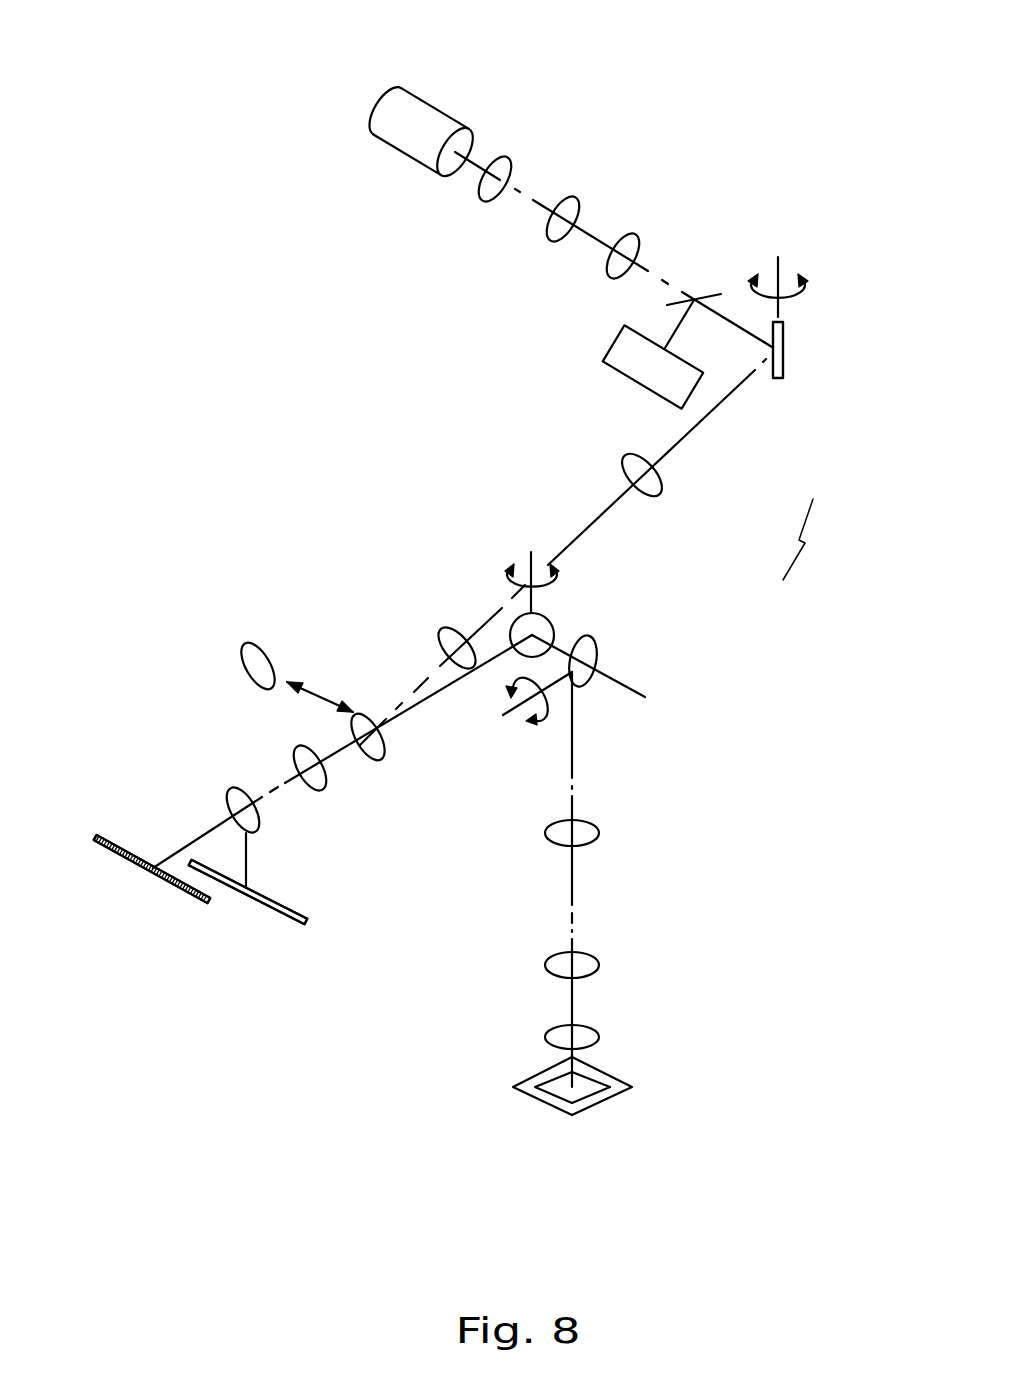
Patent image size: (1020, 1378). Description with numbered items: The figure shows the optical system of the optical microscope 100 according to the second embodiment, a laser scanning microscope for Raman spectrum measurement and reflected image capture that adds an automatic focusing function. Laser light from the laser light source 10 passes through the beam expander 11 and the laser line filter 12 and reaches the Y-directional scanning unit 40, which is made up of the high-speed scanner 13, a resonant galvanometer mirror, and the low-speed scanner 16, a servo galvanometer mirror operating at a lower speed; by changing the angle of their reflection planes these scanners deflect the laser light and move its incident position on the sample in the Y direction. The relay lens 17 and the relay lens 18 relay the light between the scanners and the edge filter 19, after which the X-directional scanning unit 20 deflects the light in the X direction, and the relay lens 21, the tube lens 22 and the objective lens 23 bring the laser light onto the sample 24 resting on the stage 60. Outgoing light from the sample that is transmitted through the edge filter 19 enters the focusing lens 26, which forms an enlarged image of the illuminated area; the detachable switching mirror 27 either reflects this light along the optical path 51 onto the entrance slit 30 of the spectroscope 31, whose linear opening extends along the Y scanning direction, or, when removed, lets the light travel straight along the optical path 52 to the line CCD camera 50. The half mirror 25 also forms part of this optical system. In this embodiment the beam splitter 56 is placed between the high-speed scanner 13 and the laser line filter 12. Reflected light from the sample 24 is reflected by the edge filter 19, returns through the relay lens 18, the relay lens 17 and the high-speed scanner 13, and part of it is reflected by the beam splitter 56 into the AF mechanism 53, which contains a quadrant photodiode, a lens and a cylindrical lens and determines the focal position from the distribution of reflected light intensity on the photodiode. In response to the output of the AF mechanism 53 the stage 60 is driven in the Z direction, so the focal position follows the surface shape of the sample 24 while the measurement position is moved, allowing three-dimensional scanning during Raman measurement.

The laser light source 10 is at (418, 110).
The beam expander 11 is at (532, 178).
The laser line filter 12 is at (625, 240).
The beam splitter 56 is at (713, 290).
The automatic focus (AF) mechanism 53 is at (613, 345).
The high-speed scanner 13 is at (778, 380).
The relay lens 17 is at (630, 467).
The low-speed scanner 16 is at (553, 630).
The Y-directional scanning unit 40 is at (811, 539).
The relay lens 18 is at (432, 641).
The X-directional scanning unit 20 is at (598, 661).
The half mirror 25 is at (253, 670).
The edge filter 19 is at (373, 760).
The focusing lens 26 is at (302, 757).
The switching mirror 27 is at (237, 813).
The optical path 52 is at (158, 863).
The line CCD camera 50 is at (168, 892).
The optical path 51 is at (247, 850).
The entrance slit 30 is at (302, 923).
The spectroscope 31 is at (248, 892).
The relay lens 21 is at (598, 833).
The tube lens 22 is at (598, 962).
The objective lens 23 is at (590, 1033).
The sample 24 is at (607, 1082).
The stage 60 is at (583, 1105).
The optical microscope 100 is at (462, 603).